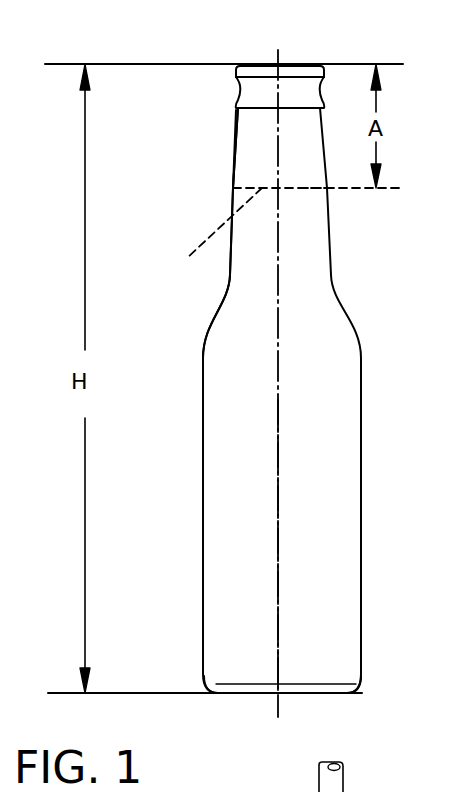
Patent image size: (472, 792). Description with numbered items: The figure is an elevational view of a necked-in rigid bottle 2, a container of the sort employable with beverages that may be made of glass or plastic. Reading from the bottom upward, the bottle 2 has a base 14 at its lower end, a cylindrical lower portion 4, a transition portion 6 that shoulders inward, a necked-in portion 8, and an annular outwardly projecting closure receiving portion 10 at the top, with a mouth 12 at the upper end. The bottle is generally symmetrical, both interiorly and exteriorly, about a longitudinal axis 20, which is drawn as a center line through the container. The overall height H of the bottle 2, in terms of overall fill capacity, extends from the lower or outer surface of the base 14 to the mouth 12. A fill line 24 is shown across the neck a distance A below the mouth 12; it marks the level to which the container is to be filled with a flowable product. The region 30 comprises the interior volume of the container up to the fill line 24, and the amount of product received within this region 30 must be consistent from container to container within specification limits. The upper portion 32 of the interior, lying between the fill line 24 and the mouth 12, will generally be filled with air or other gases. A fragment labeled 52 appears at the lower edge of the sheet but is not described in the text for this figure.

The necked-in rigid bottle 2 is at (285, 380).
The cylindrical lower portion 4 is at (203, 505).
The transition portion 6 is at (206, 323).
The necked-in portion 8 is at (236, 164).
The annular outwardly projecting closure receiving portion 10 is at (236, 105).
The mouth 12 is at (305, 64).
The base 14 is at (328, 693).
The longitudinal axis 20 is at (283, 510).
The fill line 24 is at (237, 228).
The region 30 is at (230, 418).
The upper portion 32 is at (252, 141).
The fragment of adjacent figure 52 is at (271, 777).